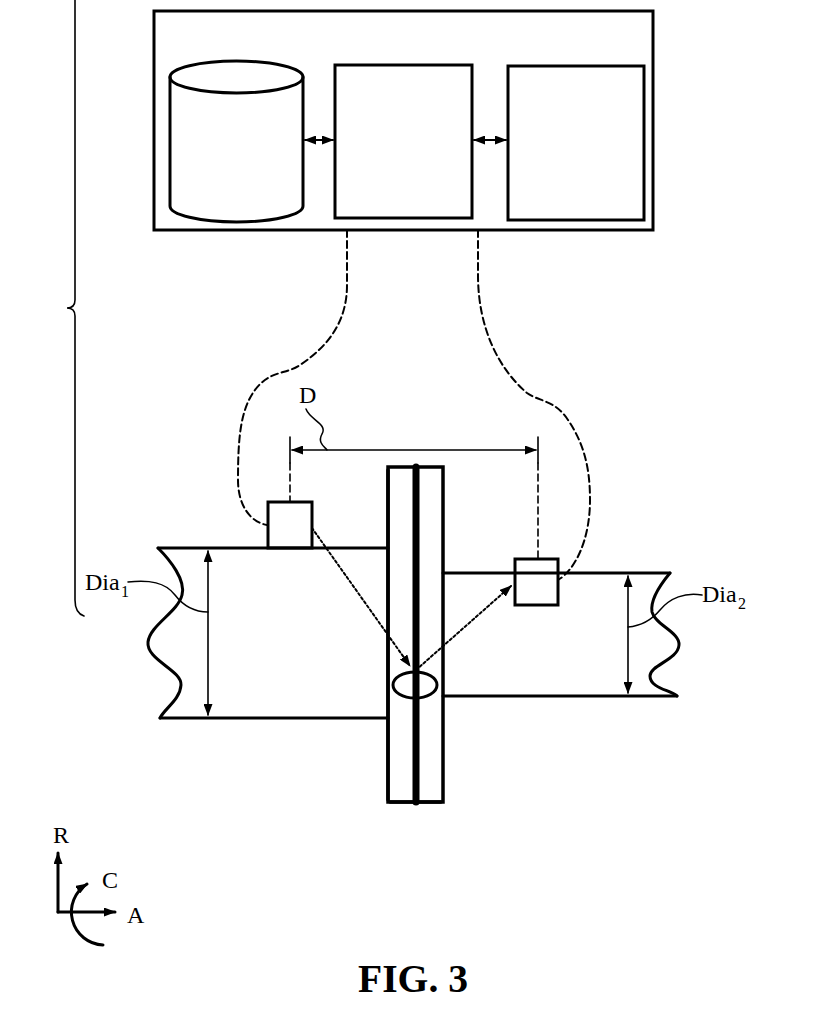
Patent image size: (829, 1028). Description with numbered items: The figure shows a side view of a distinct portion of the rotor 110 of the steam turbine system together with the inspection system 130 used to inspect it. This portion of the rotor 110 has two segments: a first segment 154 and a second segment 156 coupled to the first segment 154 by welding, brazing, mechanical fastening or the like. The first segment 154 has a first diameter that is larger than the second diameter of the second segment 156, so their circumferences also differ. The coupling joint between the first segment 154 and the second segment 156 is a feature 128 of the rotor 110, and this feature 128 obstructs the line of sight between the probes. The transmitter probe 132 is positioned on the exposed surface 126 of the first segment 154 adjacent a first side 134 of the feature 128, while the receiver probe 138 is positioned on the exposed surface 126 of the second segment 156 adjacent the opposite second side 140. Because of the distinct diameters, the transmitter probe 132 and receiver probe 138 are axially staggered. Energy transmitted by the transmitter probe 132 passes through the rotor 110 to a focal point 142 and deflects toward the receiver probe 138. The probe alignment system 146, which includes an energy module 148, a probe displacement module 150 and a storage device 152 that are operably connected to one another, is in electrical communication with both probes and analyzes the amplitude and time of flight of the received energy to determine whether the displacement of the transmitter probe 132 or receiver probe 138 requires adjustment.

The rotor 110 is at (455, 685).
The exposed surface 126 is at (419, 685).
The feature 128 is at (417, 806).
The inspection system 130 is at (67, 308).
The transmitter probe 132 is at (267, 530).
The first side 134 is at (385, 500).
The receiver probe 138 is at (548, 606).
The second side 140 is at (448, 526).
The focal point 142 is at (437, 685).
The probe alignment system 146 is at (535, 46).
The energy module 148 is at (383, 159).
The probe displacement module 150 is at (552, 211).
The storage device 152 is at (218, 181).
The first segment 154 is at (255, 719).
The second segment 156 is at (653, 697).